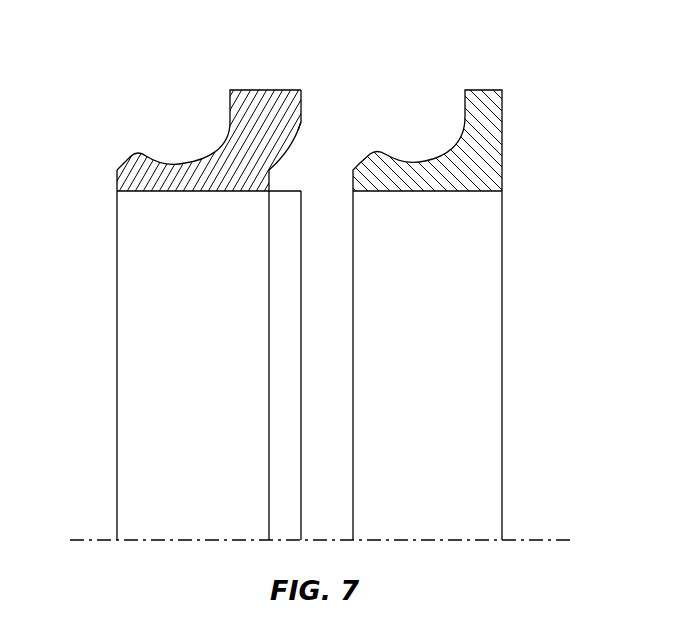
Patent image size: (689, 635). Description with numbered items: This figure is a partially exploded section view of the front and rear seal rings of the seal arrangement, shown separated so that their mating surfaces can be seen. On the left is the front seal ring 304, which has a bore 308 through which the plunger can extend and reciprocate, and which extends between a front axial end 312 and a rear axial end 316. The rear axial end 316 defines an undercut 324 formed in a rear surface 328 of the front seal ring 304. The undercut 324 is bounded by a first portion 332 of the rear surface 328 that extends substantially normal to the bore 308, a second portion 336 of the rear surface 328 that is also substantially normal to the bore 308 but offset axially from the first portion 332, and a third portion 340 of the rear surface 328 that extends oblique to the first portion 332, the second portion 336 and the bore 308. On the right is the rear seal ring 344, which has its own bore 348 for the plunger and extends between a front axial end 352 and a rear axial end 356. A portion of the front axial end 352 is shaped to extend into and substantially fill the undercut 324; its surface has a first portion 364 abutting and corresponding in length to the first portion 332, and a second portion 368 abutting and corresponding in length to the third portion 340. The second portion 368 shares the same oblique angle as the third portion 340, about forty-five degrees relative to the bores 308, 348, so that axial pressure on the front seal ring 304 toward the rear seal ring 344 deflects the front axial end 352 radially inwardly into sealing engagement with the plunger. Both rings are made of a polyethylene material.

The front seal ring 304 is at (155, 122).
The bore 308 is at (148, 193).
The front axial end 312 is at (122, 158).
The rear axial end 316 is at (309, 110).
The undercut 324 is at (289, 178).
The rear surface 328 is at (302, 102).
The first portion 332 is at (271, 180).
The second portion 336 is at (303, 126).
The third portion 340 is at (291, 158).
The rear seal ring 344 is at (527, 105).
The bore 348 is at (477, 193).
The front axial end 352 is at (340, 194).
The rear axial end 356 is at (506, 147).
The first portion 364 is at (352, 177).
The second portion 368 is at (363, 150).